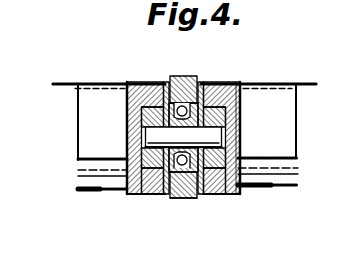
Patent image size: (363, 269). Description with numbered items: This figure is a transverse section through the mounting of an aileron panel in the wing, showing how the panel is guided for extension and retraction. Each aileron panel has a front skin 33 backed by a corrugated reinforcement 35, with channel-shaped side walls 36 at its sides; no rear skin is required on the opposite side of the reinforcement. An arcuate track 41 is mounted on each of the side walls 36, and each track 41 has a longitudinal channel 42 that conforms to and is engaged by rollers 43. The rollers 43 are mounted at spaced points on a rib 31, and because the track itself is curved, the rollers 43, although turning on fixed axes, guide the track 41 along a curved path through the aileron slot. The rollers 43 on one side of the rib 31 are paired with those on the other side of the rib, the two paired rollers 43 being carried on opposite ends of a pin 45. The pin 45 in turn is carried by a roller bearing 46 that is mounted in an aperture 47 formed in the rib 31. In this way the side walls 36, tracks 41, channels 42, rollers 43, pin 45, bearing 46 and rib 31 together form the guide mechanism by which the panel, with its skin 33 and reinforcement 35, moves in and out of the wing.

The rib 31 is at (190, 200).
The front skin 33 is at (78, 83).
The corrugated reinforcement 35 is at (78, 160).
The channel-shaped side wall 36 is at (125, 118).
The arcuate track 41 is at (138, 188).
The longitudinal channel 42 is at (157, 84).
The roller 43 is at (127, 184).
The pin 45 is at (210, 134).
The roller bearing 46 is at (187, 78).
The aperture 47 is at (176, 200).